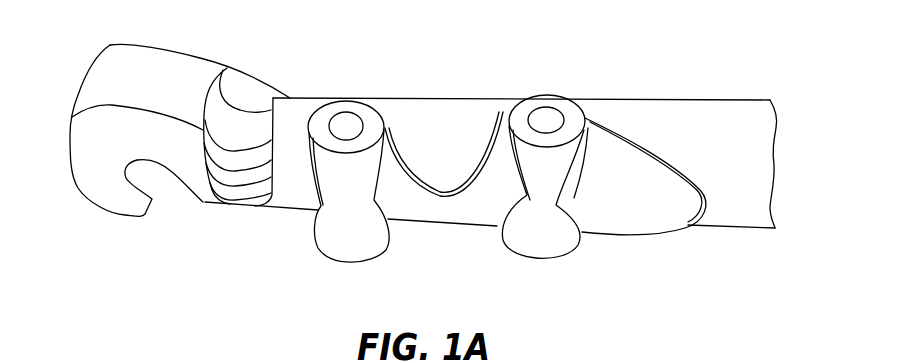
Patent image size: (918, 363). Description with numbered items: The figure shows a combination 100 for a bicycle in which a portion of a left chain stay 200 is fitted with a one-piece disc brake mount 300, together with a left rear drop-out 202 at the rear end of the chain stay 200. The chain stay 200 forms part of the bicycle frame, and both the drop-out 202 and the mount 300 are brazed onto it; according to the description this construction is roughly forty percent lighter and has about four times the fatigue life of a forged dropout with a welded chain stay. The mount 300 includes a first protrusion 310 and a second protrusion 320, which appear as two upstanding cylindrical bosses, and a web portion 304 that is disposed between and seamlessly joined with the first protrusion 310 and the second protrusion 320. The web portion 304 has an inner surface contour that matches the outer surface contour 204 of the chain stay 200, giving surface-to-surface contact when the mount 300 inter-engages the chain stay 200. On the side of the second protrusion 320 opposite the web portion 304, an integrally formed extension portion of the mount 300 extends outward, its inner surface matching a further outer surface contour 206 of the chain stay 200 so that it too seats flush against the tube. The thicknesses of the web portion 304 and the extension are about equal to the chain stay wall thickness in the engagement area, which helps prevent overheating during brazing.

The combination 100 is at (477, 66).
The left chain stay 200 is at (690, 92).
The left rear drop-out 202 is at (92, 198).
The outer surface contour 204 is at (446, 151).
The outer surface contour 206 is at (724, 163).
The one-piece disc brake mount 300 is at (642, 250).
The web portion 304 is at (449, 227).
The first protrusion 310 is at (342, 265).
The second protrusion 320 is at (538, 262).